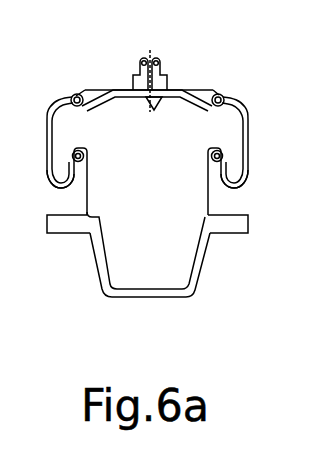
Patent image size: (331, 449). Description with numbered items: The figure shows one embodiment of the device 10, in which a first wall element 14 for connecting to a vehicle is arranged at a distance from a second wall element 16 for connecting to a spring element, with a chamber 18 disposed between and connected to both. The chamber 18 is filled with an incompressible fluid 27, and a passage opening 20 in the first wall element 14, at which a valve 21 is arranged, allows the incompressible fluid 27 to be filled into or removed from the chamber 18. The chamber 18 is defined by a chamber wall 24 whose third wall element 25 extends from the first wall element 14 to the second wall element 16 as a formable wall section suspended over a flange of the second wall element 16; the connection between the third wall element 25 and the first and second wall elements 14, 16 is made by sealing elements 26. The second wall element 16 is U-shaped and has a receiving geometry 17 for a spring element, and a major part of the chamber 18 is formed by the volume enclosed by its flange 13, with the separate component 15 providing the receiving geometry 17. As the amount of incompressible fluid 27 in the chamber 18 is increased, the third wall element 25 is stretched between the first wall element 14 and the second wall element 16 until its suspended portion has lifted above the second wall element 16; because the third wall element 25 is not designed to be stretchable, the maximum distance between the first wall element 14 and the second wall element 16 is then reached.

The device 10 is at (263, 98).
The flange 13 is at (86, 194).
The first wall element 14 is at (102, 89).
The separate component 15 is at (124, 252).
The second wall element 16 is at (215, 227).
The receiving geometry 17 is at (188, 300).
The chamber 18 is at (228, 133).
The passage opening 20 is at (168, 92).
The valve 21 is at (151, 56).
The chamber wall 24 is at (51, 138).
The third wall element 25 is at (247, 189).
The sealing element 26 is at (73, 96).
The incompressible fluid 27 is at (160, 209).